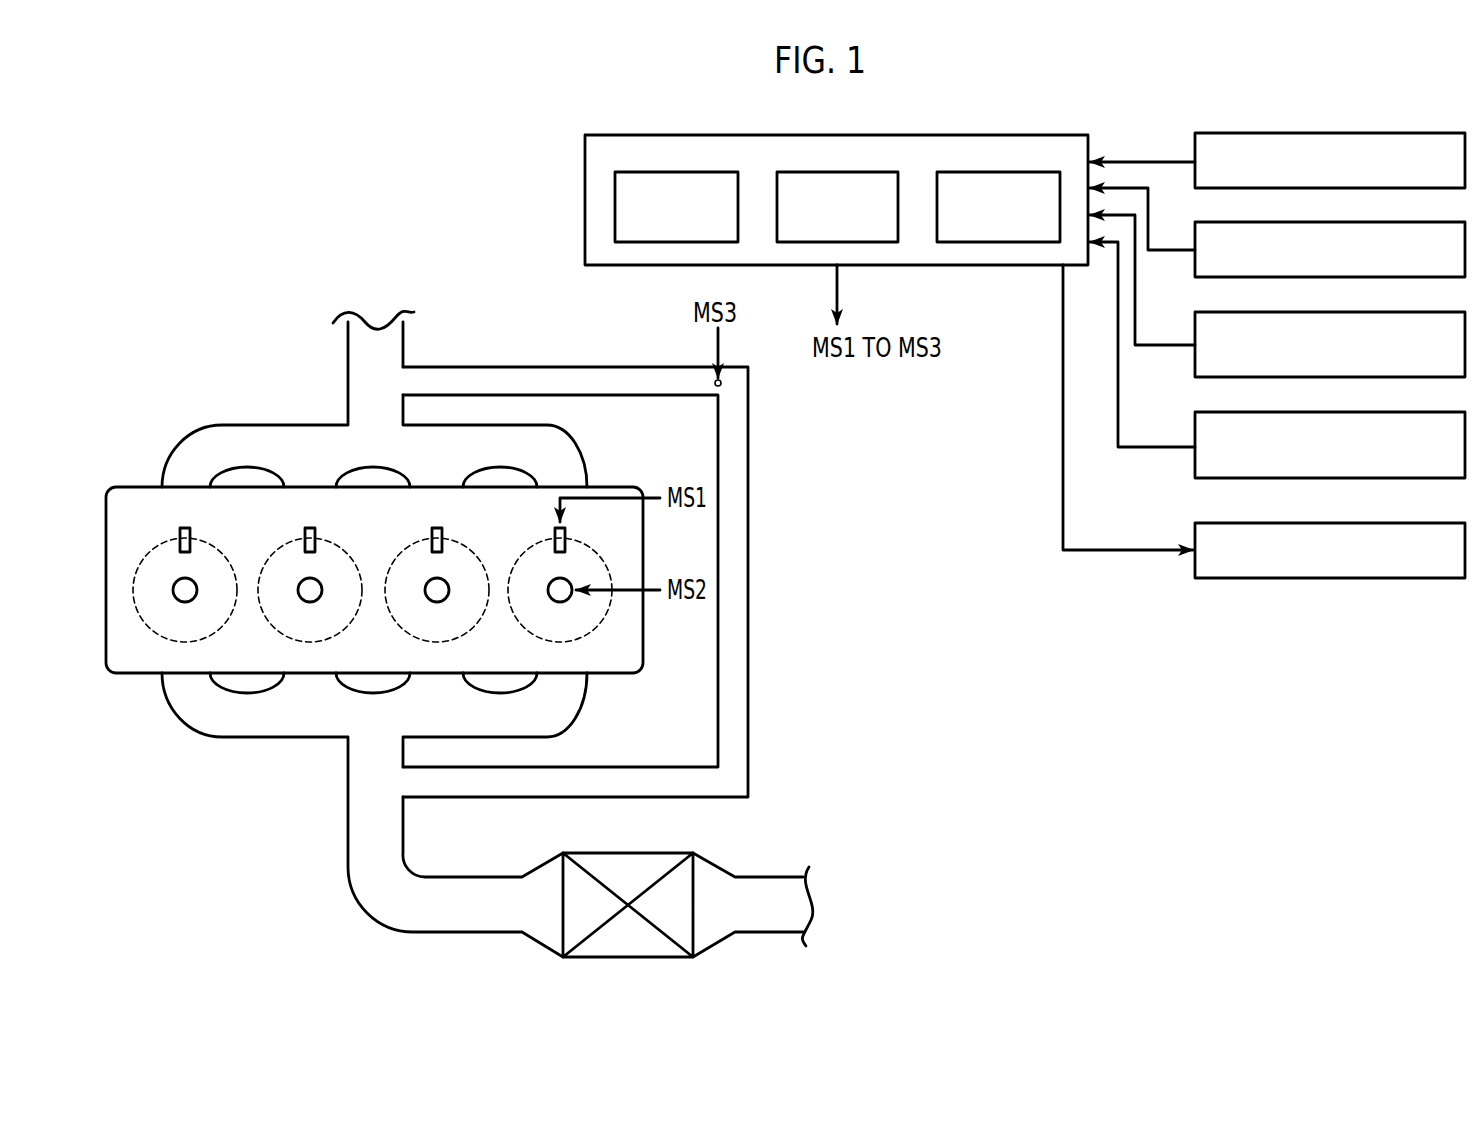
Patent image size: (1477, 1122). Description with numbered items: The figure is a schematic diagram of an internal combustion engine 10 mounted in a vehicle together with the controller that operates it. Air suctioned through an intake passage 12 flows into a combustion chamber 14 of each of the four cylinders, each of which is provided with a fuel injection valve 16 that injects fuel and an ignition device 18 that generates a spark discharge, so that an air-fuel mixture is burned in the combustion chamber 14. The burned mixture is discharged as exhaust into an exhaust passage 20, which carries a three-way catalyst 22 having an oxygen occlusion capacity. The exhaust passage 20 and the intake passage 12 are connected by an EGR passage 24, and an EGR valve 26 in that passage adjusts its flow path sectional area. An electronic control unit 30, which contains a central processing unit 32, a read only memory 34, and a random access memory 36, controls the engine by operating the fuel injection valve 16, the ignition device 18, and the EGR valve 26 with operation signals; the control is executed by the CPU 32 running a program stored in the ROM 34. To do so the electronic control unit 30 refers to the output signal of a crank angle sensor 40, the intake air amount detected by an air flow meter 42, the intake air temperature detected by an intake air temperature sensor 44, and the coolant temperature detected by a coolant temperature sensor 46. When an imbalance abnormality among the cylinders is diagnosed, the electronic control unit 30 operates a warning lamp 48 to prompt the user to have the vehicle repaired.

The internal combustion engine 10 is at (306, 358).
The intake passage 12 is at (405, 339).
The combustion chamber 14 is at (157, 576).
The fuel injection valve 16 is at (188, 528).
The ignition device 18 is at (198, 591).
The exhaust passage 20 is at (561, 716).
The three-way catalyst 22 is at (630, 858).
The EGR passage 24 is at (750, 519).
The EGR valve 26 is at (722, 385).
The electronic control unit 30 is at (1000, 135).
The central processing unit (CPU) 32 is at (664, 172).
The read only memory (ROM) 34 is at (824, 172).
The random access memory (RAM) 36 is at (985, 172).
The crank angle sensor 40 is at (1395, 134).
The air flow meter 42 is at (1396, 224).
The intake air temperature sensor 44 is at (1396, 313).
The coolant temperature sensor 46 is at (1396, 414).
The warning lamp 48 is at (1396, 524).